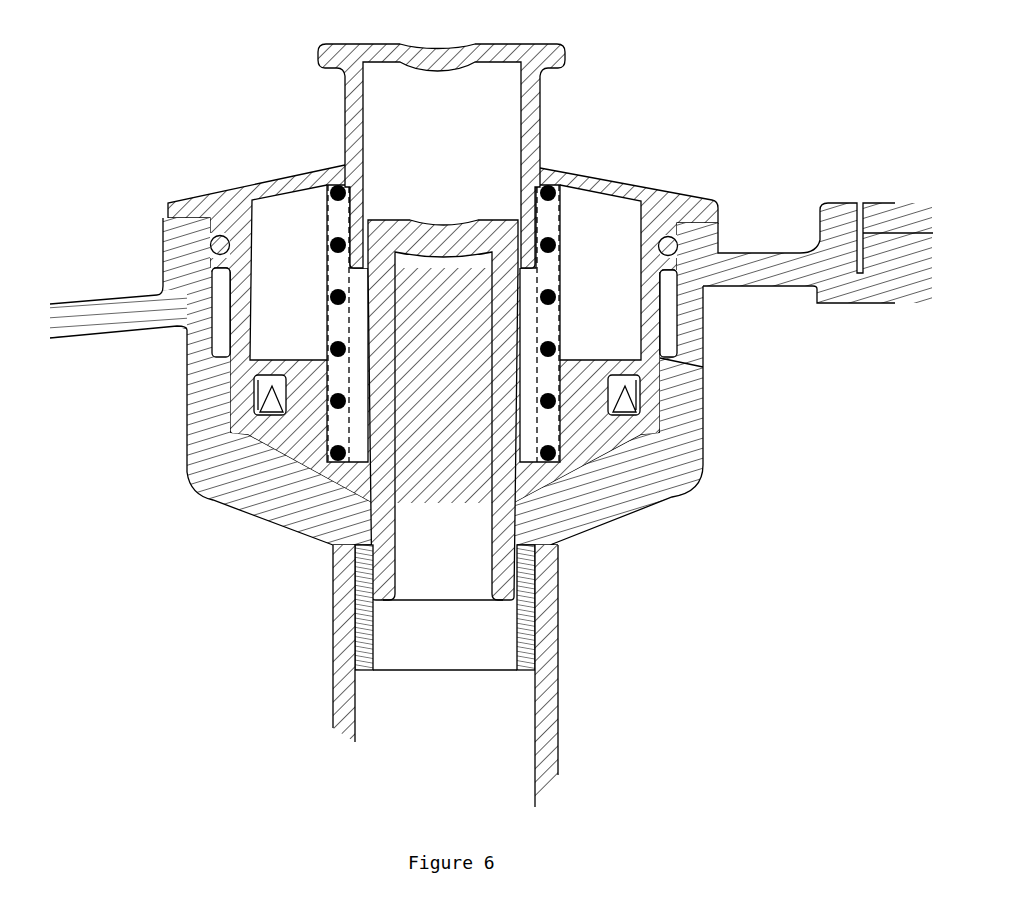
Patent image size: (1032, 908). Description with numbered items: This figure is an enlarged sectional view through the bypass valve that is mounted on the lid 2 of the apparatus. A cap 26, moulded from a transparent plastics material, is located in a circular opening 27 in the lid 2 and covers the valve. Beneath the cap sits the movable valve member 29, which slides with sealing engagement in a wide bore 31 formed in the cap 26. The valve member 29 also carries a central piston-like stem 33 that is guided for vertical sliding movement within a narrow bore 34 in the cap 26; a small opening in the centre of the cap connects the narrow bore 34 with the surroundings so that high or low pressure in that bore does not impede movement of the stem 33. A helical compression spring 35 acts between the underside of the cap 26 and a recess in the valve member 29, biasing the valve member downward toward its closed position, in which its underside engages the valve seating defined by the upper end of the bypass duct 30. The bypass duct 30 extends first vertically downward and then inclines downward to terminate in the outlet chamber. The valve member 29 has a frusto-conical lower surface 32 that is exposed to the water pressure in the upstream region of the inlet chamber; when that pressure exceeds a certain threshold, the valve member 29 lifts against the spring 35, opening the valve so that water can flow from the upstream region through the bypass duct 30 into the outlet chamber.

The lid 2 is at (777, 262).
The cap 26 is at (352, 113).
The circular opening 27 is at (677, 333).
The valve member 29 is at (382, 406).
The bypass duct 30 is at (545, 738).
The wide bore 31 is at (250, 243).
The frusto-conical lower surface 32 is at (592, 462).
The piston-like stem 33 is at (380, 308).
The narrow bore 34 is at (512, 125).
The helical compression spring 35 is at (558, 245).